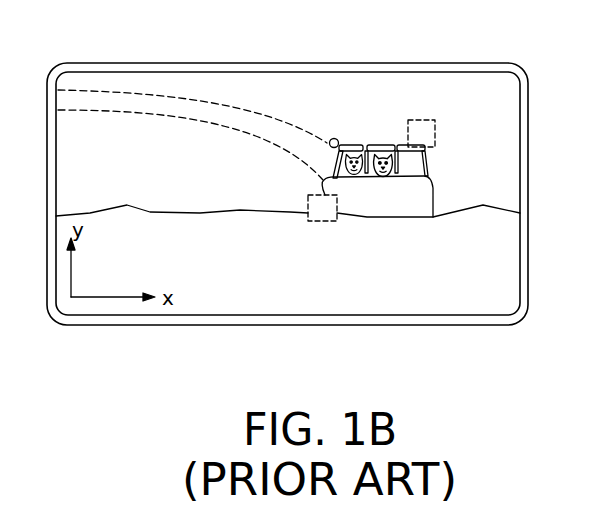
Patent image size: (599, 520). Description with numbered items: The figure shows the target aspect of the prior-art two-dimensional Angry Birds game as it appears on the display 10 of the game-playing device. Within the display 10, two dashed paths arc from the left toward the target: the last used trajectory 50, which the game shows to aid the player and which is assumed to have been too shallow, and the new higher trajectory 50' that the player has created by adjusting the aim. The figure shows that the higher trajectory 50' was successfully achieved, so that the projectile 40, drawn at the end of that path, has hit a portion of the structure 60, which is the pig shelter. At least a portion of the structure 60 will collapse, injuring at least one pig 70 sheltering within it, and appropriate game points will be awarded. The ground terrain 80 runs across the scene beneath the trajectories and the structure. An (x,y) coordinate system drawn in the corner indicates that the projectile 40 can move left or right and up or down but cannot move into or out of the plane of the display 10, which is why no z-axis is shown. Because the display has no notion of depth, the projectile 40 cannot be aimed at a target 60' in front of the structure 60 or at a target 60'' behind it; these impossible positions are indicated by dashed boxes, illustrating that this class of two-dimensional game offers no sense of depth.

The display 10 is at (318, 88).
The projectile 40 is at (339, 139).
The last used trajectory 50 is at (190, 145).
The desired trajectory 50' is at (192, 114).
The pig shelter 60 is at (397, 176).
The target in front of structure 60' is at (346, 228).
The target behind structure 60'' is at (445, 117).
The pigs 70 is at (355, 178).
The ground terrain 80 is at (145, 207).